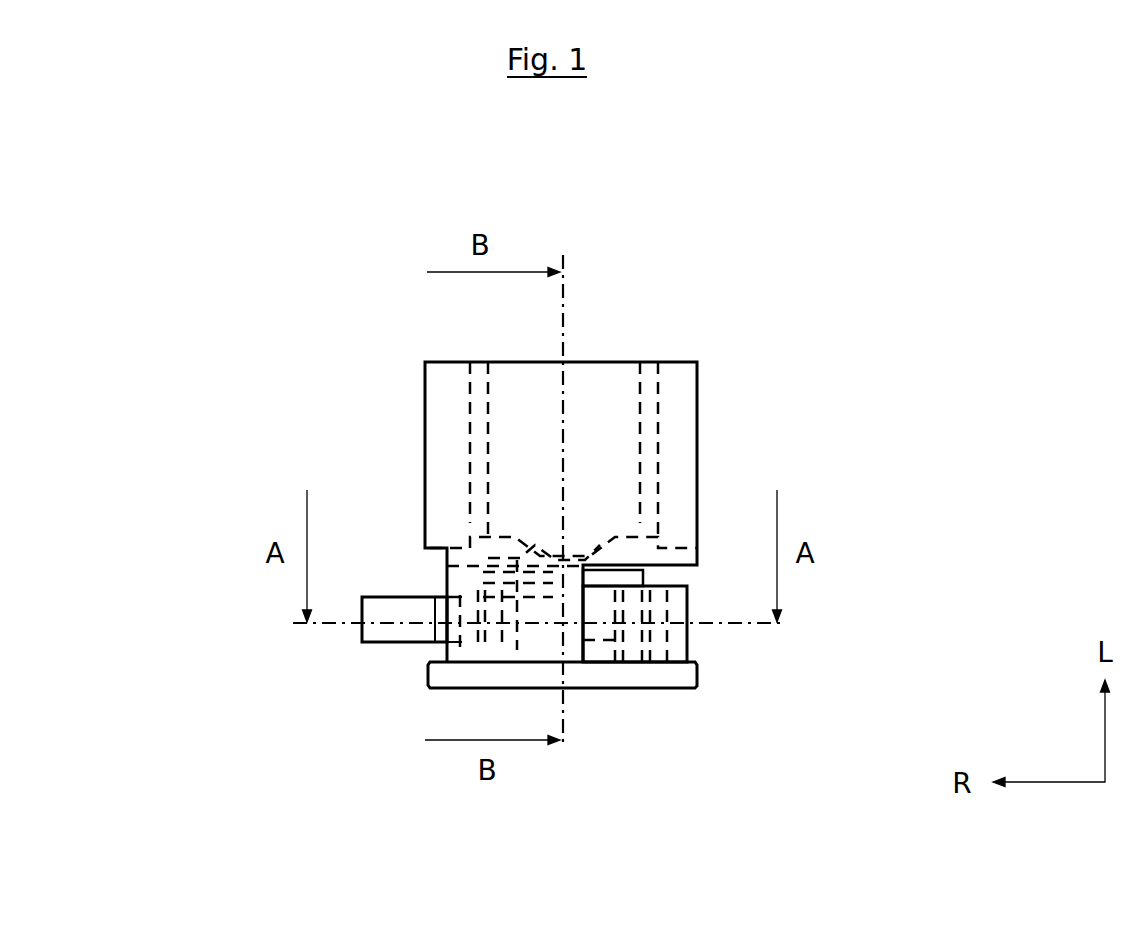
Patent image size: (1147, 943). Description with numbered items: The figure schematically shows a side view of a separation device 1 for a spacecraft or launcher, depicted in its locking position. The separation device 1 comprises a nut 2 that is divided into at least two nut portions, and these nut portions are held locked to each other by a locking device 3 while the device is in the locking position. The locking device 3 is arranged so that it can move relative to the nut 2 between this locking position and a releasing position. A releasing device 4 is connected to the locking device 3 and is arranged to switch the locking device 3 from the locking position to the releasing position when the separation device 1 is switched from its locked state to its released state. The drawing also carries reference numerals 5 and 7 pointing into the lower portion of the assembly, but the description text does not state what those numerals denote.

The separation device 1 is at (237, 298).
The nut 2 is at (600, 650).
The locking device 3 is at (690, 635).
The releasing device 4 is at (352, 641).
The circuit board 5 is at (660, 643).
The sensor element 7 is at (635, 643).